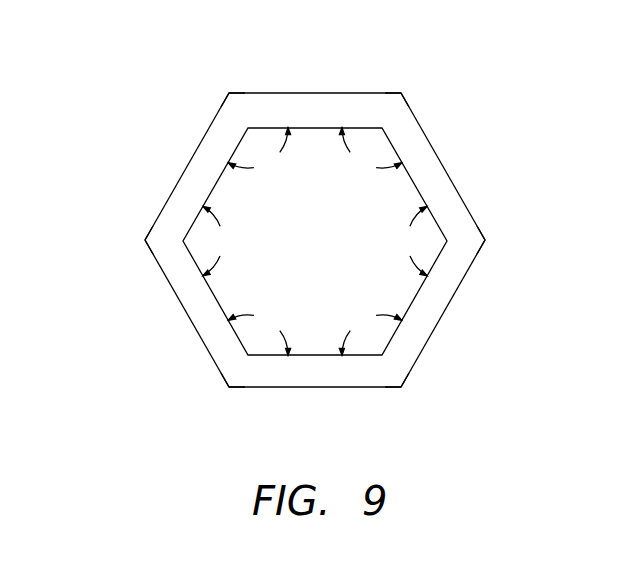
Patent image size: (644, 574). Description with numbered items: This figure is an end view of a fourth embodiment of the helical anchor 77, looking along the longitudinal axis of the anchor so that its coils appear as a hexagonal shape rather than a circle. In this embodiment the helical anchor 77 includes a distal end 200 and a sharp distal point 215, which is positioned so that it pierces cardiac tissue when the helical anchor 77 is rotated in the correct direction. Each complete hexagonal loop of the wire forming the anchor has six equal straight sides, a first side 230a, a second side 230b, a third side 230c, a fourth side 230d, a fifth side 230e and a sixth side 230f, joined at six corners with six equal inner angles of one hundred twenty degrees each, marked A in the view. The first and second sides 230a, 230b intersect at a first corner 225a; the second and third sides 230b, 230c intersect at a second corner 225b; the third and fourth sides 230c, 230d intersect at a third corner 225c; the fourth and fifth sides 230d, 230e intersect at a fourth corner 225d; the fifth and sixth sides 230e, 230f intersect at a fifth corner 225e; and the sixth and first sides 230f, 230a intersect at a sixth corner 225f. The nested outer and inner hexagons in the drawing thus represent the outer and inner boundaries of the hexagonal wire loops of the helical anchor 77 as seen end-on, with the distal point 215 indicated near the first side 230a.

The helical anchor 77 is at (150, 115).
The distal end 200 is at (125, 202).
The distal point 215 is at (295, 358).
The first corner 225a is at (229, 387).
The second corner 225b is at (145, 240).
The third corner 225c is at (229, 93).
The fourth corner 225d is at (401, 93).
The fifth corner 225e is at (485, 240).
The sixth corner 225f is at (401, 387).
The first side 230a is at (270, 388).
The second side 230b is at (183, 315).
The third side 230c is at (183, 167).
The fourth side 230d is at (315, 93).
The fifth side 230e is at (443, 167).
The sixth side 230f is at (445, 315).